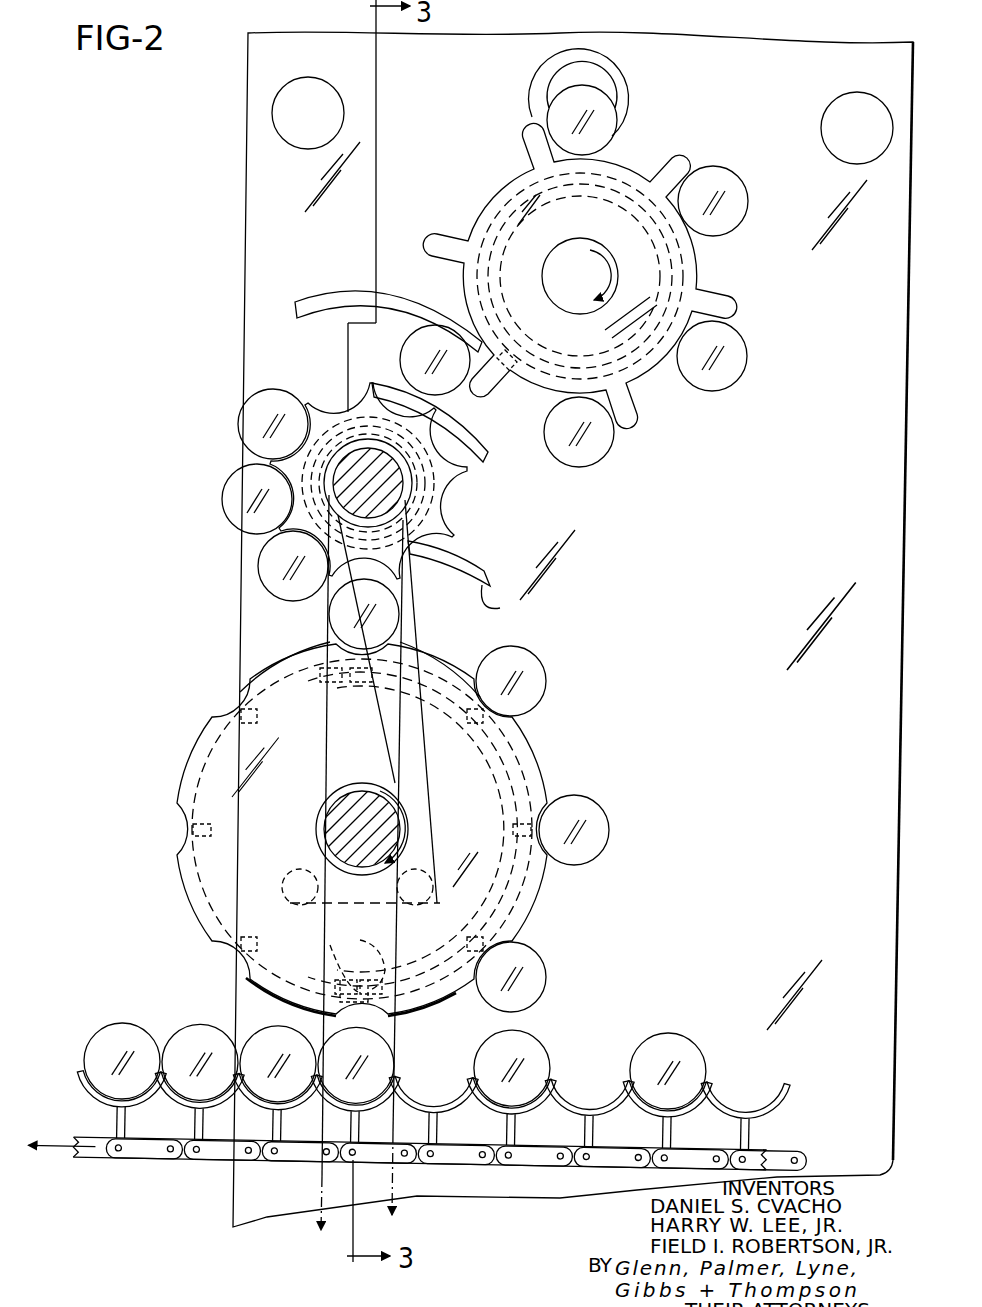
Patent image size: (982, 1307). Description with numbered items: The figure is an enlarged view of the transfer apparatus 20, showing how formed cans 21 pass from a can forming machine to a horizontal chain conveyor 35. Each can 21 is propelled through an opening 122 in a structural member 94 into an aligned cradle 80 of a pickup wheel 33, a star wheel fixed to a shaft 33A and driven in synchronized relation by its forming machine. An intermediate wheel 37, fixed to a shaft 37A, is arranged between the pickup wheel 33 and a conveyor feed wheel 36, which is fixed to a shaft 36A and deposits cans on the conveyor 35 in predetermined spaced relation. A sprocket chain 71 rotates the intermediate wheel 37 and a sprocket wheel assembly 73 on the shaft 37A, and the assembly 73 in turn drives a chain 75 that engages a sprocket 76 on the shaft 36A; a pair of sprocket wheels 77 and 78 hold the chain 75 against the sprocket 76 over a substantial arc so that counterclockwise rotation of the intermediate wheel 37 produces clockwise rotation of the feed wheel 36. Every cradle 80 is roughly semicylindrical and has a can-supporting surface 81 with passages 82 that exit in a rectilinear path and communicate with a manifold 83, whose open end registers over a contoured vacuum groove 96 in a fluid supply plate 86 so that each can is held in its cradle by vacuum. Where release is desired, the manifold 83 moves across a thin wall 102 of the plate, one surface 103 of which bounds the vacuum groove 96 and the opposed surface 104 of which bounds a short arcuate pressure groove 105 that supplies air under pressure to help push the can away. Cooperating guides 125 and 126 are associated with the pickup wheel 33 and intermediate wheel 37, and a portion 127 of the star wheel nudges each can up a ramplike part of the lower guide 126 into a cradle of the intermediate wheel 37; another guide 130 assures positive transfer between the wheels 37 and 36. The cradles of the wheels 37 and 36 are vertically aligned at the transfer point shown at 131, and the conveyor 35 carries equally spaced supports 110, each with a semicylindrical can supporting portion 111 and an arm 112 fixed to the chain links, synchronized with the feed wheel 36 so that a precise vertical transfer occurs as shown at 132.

The transfer apparatus 20 is at (104, 300).
The can 21 is at (748, 196).
The pickup wheel 33 is at (522, 205).
The shaft 33A is at (600, 312).
The chain conveyor 35 is at (465, 1160).
The conveyor feed wheel 36 is at (530, 712).
The shaft 36A is at (335, 820).
The intermediate wheel 37 is at (446, 516).
The shaft 37A is at (415, 535).
The sprocket chain 71 is at (328, 768).
The sprocket wheel assembly 73 is at (420, 478).
The chain 75 is at (428, 772).
The sprocket 76 is at (352, 785).
The sprocket wheel 77 is at (286, 890).
The sprocket wheel 78 is at (420, 905).
The cradle 80 is at (460, 228).
The can-supporting surface 81 is at (465, 228).
The passages 82 is at (458, 250).
The manifold 83 is at (185, 920).
The fluid supply plate 86 is at (700, 312).
The structural member 94 is at (252, 270).
The vacuum groove 96 is at (690, 284).
The thin wall 102 is at (410, 1010).
The surface 103 is at (376, 968).
The surface 104 is at (340, 985).
The pressure groove 105 is at (334, 980).
The support 110 is at (92, 1096).
The can supporting portion 111 is at (92, 1062).
The arm 112 is at (200, 1138).
The opening 122 is at (610, 85).
The guide 125 is at (308, 298).
The lower guide 126 is at (490, 455).
The portion of the star wheel 127 is at (512, 356).
The guide 130 is at (500, 607).
The point of transfer 131 is at (430, 622).
The point of vertical transfer 132 is at (310, 1021).